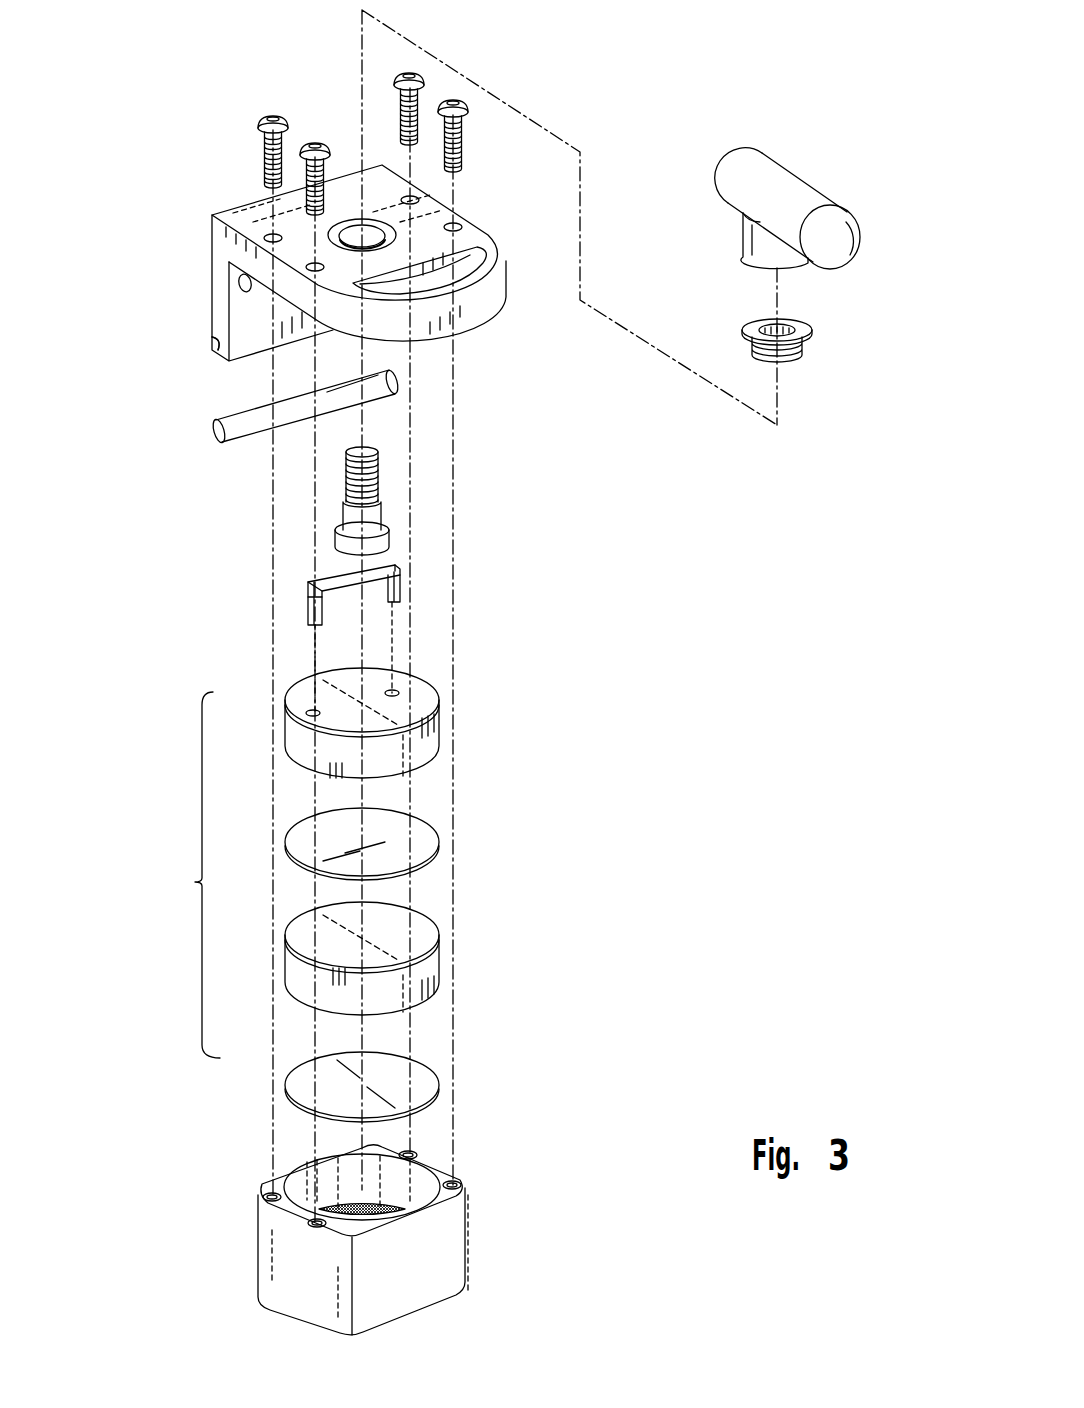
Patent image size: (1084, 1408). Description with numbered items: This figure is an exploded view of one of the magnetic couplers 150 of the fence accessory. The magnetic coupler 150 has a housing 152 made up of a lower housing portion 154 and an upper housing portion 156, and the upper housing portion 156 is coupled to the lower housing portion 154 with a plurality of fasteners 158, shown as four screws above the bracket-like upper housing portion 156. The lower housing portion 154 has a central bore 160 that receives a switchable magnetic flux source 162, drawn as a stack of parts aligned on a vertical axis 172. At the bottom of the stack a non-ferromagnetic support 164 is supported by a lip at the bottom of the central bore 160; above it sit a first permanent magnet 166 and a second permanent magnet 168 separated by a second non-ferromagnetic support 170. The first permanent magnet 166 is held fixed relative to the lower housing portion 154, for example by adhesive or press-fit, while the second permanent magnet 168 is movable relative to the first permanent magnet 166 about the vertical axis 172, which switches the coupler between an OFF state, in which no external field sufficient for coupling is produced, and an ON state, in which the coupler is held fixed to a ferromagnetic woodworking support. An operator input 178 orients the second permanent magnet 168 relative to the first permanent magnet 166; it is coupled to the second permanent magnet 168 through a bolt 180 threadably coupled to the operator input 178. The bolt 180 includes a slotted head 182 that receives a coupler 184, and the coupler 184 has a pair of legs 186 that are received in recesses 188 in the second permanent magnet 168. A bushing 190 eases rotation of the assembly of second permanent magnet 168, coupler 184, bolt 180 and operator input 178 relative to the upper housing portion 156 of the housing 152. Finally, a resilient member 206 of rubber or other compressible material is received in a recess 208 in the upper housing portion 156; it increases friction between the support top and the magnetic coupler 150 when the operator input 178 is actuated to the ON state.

The magnetic coupler 150 is at (652, 92).
The housing 152 is at (327, 1250).
The lower housing portion 154 is at (471, 1279).
The upper housing portion 156 is at (284, 281).
The fasteners 158 is at (315, 140).
The central bore 160 is at (422, 1183).
The switchable magnetic flux source 162 is at (363, 879).
The non-ferromagnetic support 164 is at (440, 1071).
The first permanent magnet 166 is at (440, 958).
The second permanent magnet 168 is at (373, 707).
The second non-ferromagnetic support 170 is at (438, 827).
The vertical axis 172 is at (357, 47).
The operator input 178 is at (858, 200).
The bolt 180 is at (386, 480).
The slotted head 182 is at (338, 548).
The coupler 184 is at (355, 573).
The legs 186 is at (298, 613).
The recesses 188 is at (313, 713).
The bushing 190 is at (819, 343).
The resilient member 206 is at (207, 433).
The recess 208 is at (212, 362).